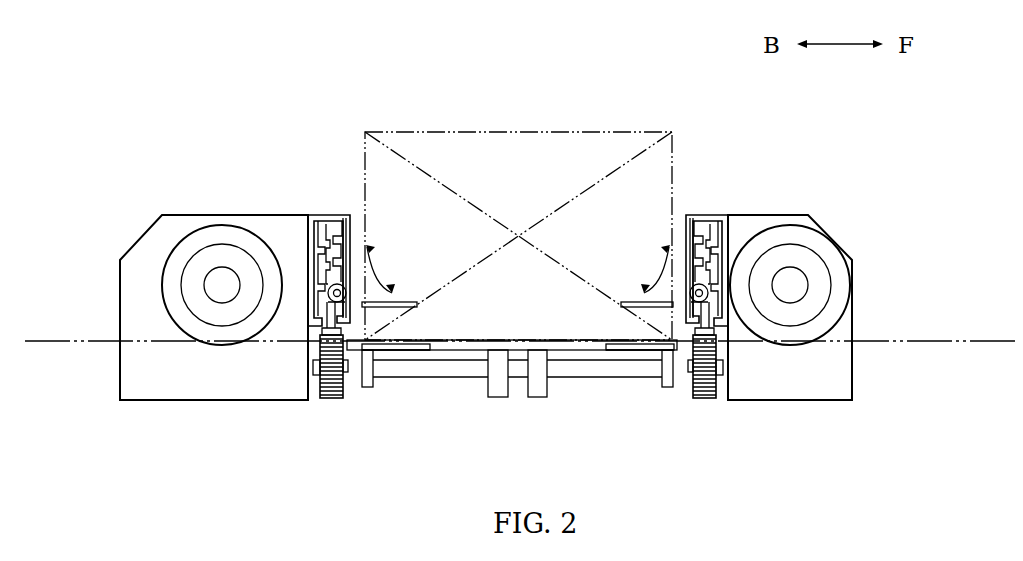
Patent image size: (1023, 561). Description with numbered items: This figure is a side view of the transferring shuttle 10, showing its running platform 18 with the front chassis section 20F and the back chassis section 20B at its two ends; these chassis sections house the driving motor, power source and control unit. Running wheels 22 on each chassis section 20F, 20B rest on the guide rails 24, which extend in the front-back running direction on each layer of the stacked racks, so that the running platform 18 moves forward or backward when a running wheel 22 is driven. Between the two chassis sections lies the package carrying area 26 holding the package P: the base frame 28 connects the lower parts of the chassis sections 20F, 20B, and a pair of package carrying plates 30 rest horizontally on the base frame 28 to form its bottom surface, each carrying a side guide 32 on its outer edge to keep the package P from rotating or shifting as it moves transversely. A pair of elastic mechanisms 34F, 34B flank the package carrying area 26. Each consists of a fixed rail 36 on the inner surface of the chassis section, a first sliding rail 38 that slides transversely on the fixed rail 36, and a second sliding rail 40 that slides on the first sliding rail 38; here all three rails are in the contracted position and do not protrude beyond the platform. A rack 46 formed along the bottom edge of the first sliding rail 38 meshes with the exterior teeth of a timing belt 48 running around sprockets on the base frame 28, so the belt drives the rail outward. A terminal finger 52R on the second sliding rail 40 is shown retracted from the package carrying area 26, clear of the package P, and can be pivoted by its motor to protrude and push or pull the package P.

The transferring shuttle 10 is at (843, 175).
The running platform 18 is at (828, 232).
The back chassis section 20B is at (140, 298).
The front chassis section 20F is at (842, 330).
The running wheels 22 is at (215, 222).
The guide rails 24 is at (938, 340).
The package carrying area 26 is at (610, 330).
The base frame 28 is at (468, 347).
The package carrying plates 30 is at (412, 347).
The side guide 32 is at (356, 345).
The back elastic mechanism 34B is at (327, 217).
The front elastic mechanism 34F is at (708, 217).
The fixed rail 36 is at (312, 217).
The first sliding rail 38 is at (341, 217).
The second sliding rail 40 is at (373, 305).
The rack 46 is at (307, 333).
The timing belt 48 is at (331, 398).
The terminal finger 52R is at (350, 227).
The package P is at (582, 130).